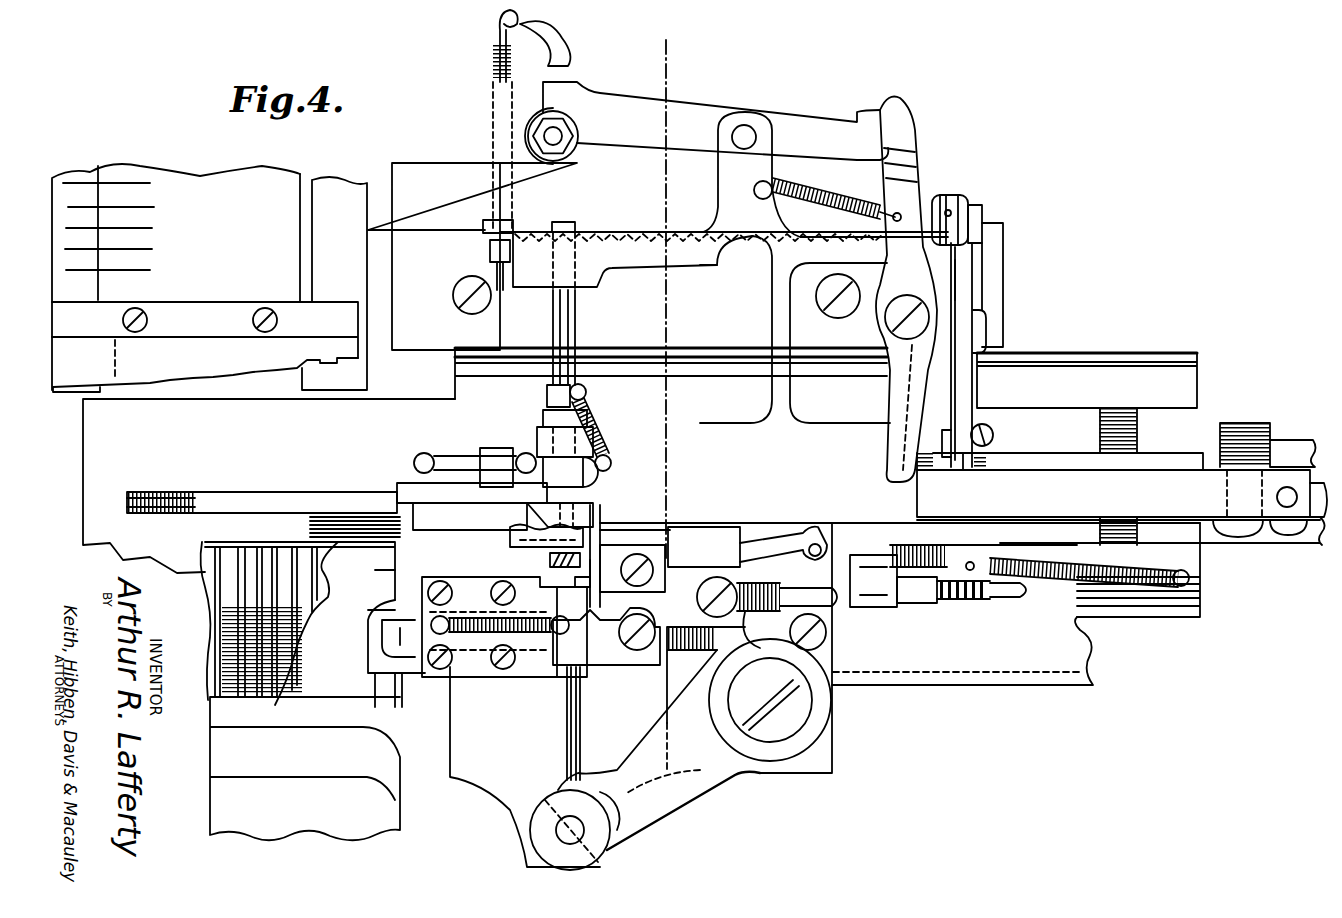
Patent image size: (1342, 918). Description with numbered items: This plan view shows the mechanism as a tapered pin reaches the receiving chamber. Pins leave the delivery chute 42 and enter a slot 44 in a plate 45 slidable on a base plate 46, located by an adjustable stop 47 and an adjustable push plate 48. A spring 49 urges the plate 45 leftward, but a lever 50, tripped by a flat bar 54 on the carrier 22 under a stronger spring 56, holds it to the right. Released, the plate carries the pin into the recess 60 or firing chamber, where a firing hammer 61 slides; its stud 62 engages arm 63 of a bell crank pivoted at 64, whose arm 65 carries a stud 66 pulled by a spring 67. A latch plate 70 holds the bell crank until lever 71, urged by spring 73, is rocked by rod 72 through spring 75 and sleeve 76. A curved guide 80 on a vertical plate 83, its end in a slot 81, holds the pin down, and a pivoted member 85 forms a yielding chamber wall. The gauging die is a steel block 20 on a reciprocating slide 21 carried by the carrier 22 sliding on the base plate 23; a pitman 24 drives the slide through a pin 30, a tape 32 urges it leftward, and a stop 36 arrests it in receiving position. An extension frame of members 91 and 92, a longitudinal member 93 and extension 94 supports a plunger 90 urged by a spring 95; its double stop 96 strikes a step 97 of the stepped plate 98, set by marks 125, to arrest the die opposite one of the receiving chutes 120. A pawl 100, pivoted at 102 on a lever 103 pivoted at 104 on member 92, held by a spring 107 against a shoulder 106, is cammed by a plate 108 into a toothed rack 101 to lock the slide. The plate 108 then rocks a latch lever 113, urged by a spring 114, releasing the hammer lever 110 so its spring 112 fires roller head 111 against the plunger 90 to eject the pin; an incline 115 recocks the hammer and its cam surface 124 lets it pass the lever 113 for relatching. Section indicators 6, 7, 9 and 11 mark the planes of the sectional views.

The section line 6- 6 is at (379, 566).
The section line 7- 7 is at (368, 638).
The section line 9- 9 is at (565, 228).
The section line 11- 11 is at (688, 606).
The steel block 20 is at (590, 520).
The reciprocating slide 21 is at (715, 440).
The carrier 22 is at (1092, 360).
The base plate 23 is at (406, 410).
The pitman 24 is at (1285, 448).
The pin 30 is at (1253, 530).
The tape 32 is at (291, 500).
The stop 36 is at (1190, 533).
The delivery chute 42 is at (668, 66).
The slot 44 is at (606, 636).
The plate 45 is at (368, 612).
The base plate 46 is at (467, 753).
The adjustable stop 47 is at (622, 636).
The adjustable push plate 48 is at (610, 568).
The spring 49 is at (480, 634).
The lever 50 is at (402, 647).
The flat bar 54 is at (433, 548).
The spring 56 is at (1058, 566).
The recess 60 is at (560, 592).
The firing hammer 61 is at (581, 704).
The stud 62 is at (560, 828).
The arm of bell crank lever 63 is at (693, 767).
The pivot of bell crank lever 64 is at (800, 709).
The arm of bell crank lever 65 is at (723, 647).
The stud 66 is at (720, 578).
The spring 67 is at (792, 628).
The latch plate 70 is at (758, 535).
The lever 71 is at (845, 575).
The rod 72 is at (1010, 597).
The spring 73 is at (898, 548).
The spring 75 is at (962, 605).
The slidable sleeve 76 is at (913, 593).
The curved guide 80 is at (552, 560).
The slot 81 is at (576, 587).
The vertical plate 83 is at (795, 540).
The pivoted member 85 is at (466, 625).
The spring pressed plunger 90 is at (566, 333).
The laterally extending member 91 is at (783, 311).
The laterally extending member 92 is at (937, 387).
The longitudinal member 93 is at (852, 298).
The extension 94 is at (654, 252).
The spring 95 is at (586, 420).
The double stop portion 96 is at (548, 398).
The steps 97 is at (298, 375).
The stepped plate 98 is at (178, 362).
The pawl 100 is at (947, 207).
The toothed rack 101 is at (637, 231).
The pivot of pawl 102 is at (950, 216).
The lever 103 is at (967, 290).
The pivot of lever 104 is at (987, 328).
The shoulder 106 is at (914, 289).
The spring 107 is at (993, 434).
The plate 108 is at (1054, 462).
The pivoted lever 110 is at (636, 118).
The roller head 111 is at (528, 136).
The spring 112 is at (495, 74).
The lever 113 is at (901, 190).
The spring 114 is at (847, 191).
The incline 115 is at (433, 210).
The receiving chutes 120 is at (264, 630).
The cam surface 124 is at (866, 160).
The marks 125 is at (124, 205).